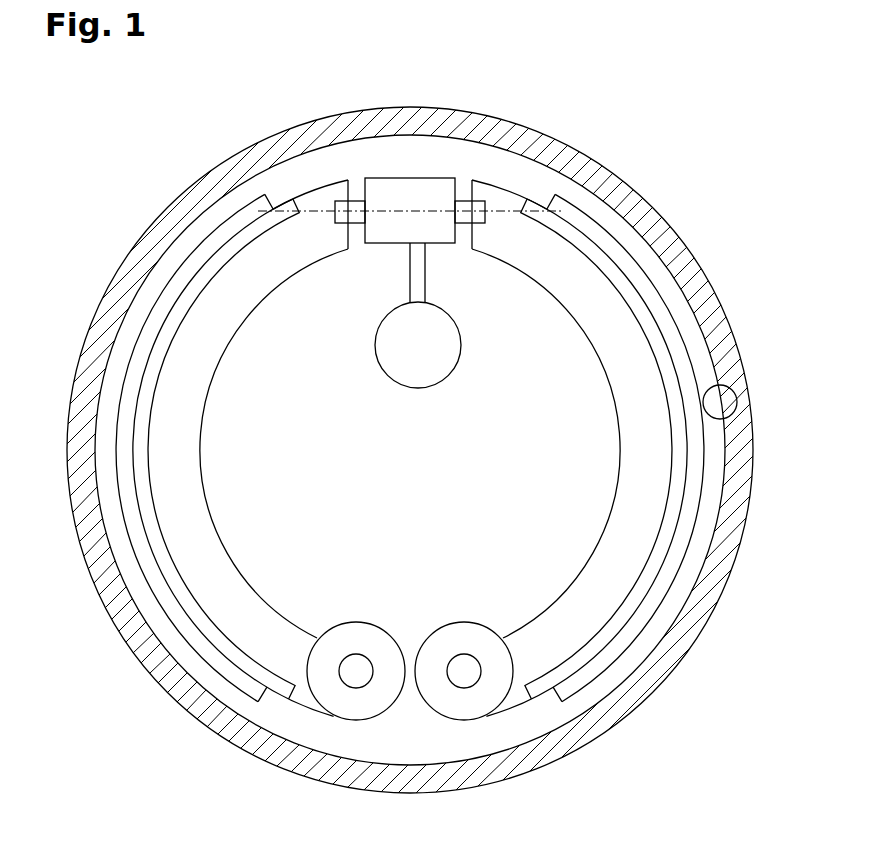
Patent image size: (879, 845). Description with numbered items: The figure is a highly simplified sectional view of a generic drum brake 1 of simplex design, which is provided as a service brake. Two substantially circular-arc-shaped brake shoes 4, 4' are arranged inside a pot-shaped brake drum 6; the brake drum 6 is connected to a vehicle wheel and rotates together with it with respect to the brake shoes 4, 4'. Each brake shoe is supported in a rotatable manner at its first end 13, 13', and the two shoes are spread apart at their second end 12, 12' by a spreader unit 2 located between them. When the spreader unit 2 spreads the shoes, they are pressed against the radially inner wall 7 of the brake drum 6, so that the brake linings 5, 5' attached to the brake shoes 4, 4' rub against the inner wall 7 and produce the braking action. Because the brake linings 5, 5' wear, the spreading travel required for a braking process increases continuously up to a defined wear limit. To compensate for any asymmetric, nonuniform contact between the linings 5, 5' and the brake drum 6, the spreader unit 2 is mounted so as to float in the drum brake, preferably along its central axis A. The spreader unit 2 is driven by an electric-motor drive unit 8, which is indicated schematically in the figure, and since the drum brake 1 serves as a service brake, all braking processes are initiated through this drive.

The drum brake 1 is at (667, 134).
The spreader unit 2 is at (413, 166).
The brake shoe 4 is at (548, 144).
The brake shoe 4' is at (268, 145).
The brake lining 5 is at (600, 448).
The brake lining 5' is at (226, 448).
The brake drum 6 is at (722, 313).
The inner wall 7 is at (728, 412).
The electric-motor drive unit 8 is at (455, 370).
The second end 12 is at (487, 153).
The second end 12' is at (329, 153).
The first end 13 is at (468, 733).
The first end 13' is at (347, 731).
The central axis A is at (407, 214).